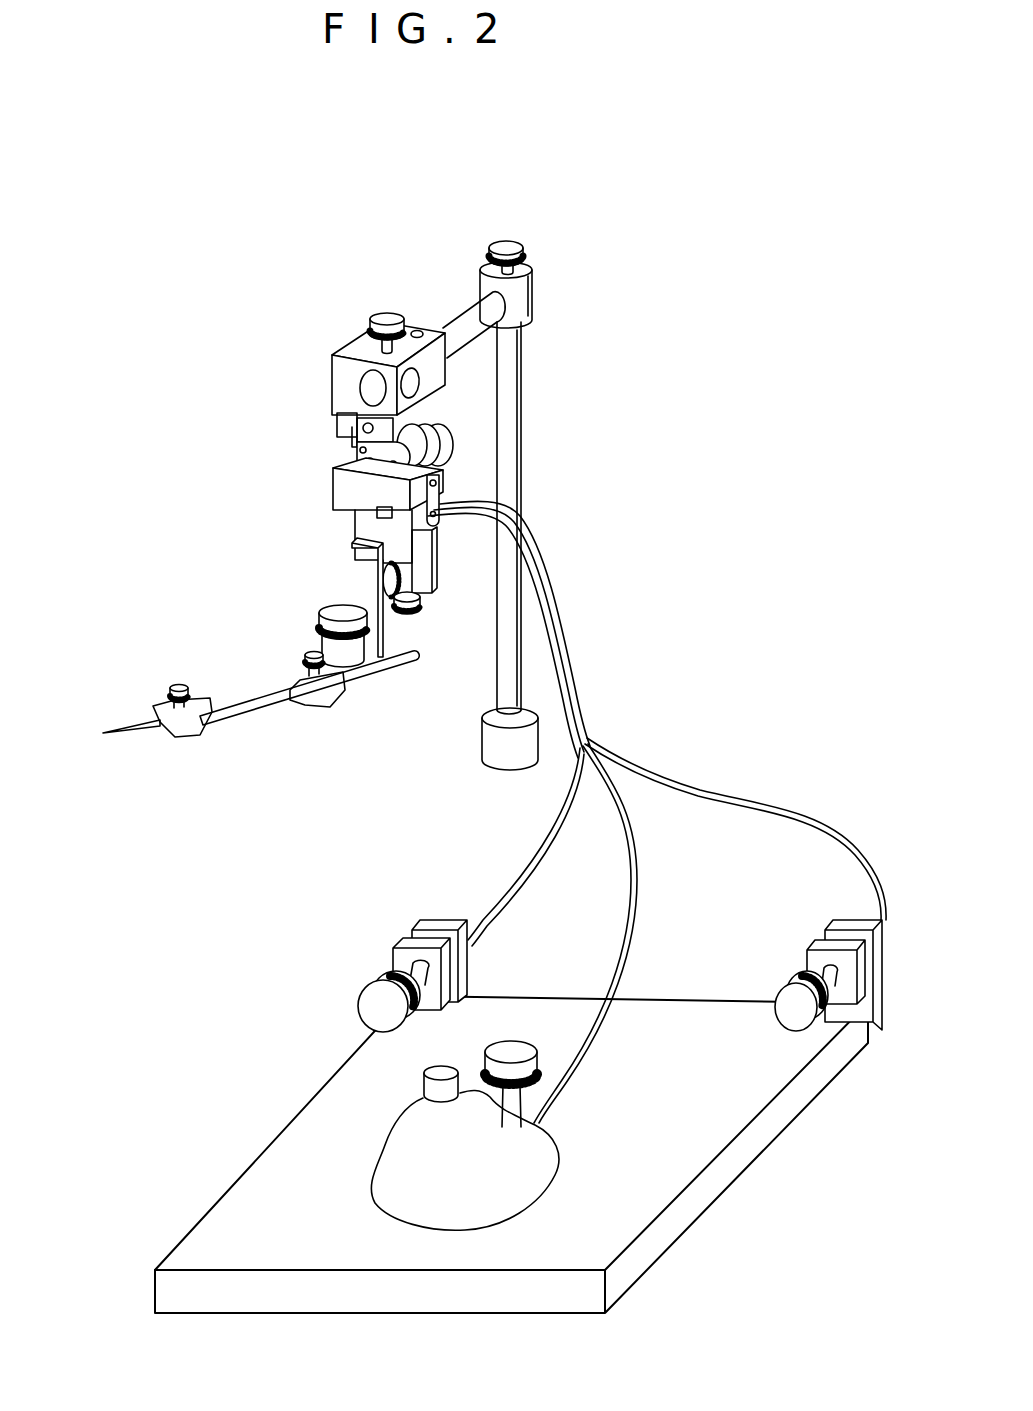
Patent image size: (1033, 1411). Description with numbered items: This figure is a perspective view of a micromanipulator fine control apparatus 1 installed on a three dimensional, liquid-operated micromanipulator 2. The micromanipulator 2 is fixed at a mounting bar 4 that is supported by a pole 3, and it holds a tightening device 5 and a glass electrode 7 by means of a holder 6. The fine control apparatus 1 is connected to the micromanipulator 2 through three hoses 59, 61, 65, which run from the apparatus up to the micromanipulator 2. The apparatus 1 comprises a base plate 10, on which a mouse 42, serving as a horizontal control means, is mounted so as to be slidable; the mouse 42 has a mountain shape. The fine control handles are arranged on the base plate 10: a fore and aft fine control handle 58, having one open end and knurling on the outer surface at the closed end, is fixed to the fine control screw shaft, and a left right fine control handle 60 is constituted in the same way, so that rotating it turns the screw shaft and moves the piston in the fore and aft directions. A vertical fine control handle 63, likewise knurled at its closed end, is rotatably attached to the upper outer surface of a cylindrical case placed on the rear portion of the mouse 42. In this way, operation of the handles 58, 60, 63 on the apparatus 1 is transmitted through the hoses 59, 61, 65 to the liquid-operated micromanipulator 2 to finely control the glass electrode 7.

The micromanipulator fine control apparatus 1 is at (322, 991).
The three dimensional, liquid-operated micromanipulator 2 is at (348, 343).
The pole 3 is at (522, 482).
The mounting bar 4 is at (463, 312).
The tightening device 5 is at (356, 577).
The holder 6 is at (263, 697).
The glass electrode 7 is at (138, 718).
The base plate 10 is at (703, 1157).
The mouse 42 is at (387, 1155).
The fore and aft fine control handle 58 is at (370, 1003).
The hose 59 is at (510, 887).
The left right fine control handle 60 is at (806, 1022).
The hose 61 is at (763, 802).
The vertical fine control handle 63 is at (493, 1050).
The hose 65 is at (623, 915).